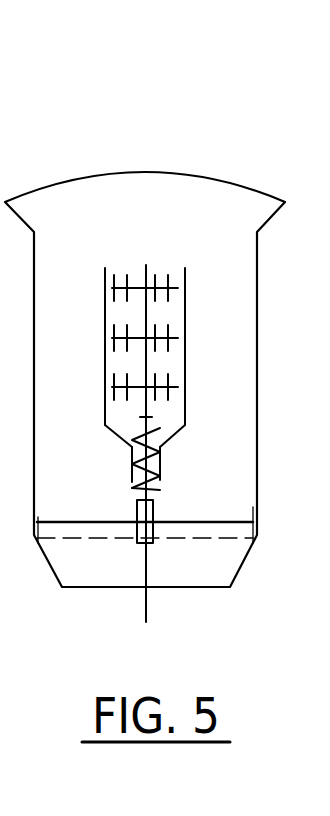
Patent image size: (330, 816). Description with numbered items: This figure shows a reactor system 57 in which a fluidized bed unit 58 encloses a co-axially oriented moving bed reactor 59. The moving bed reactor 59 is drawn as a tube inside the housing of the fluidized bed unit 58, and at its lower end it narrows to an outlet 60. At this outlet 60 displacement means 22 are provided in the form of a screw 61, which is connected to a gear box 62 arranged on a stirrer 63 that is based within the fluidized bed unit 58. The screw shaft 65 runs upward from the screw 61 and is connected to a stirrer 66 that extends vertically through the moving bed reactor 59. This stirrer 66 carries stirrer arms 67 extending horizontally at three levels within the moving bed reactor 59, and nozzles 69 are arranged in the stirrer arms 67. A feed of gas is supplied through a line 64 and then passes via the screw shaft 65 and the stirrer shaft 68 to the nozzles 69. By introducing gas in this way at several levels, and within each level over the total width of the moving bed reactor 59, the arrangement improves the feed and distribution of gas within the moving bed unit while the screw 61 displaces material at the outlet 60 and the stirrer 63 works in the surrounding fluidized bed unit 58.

The reactor system 57 is at (66, 122).
The fluidized bed unit 58 is at (258, 444).
The moving bed reactor 59 is at (186, 355).
The outlet 60 is at (158, 463).
The screw 61 is at (133, 470).
The gear box 62 is at (153, 508).
The stirrer 63 is at (225, 522).
The line 64 is at (148, 608).
The screw shaft 65 is at (131, 447).
The stirrer 66 is at (145, 360).
The stirrer arms 67 is at (178, 285).
The stirrer shaft 68 is at (147, 417).
The nozzles 69 is at (117, 285).
The displacement means 22 is at (132, 482).